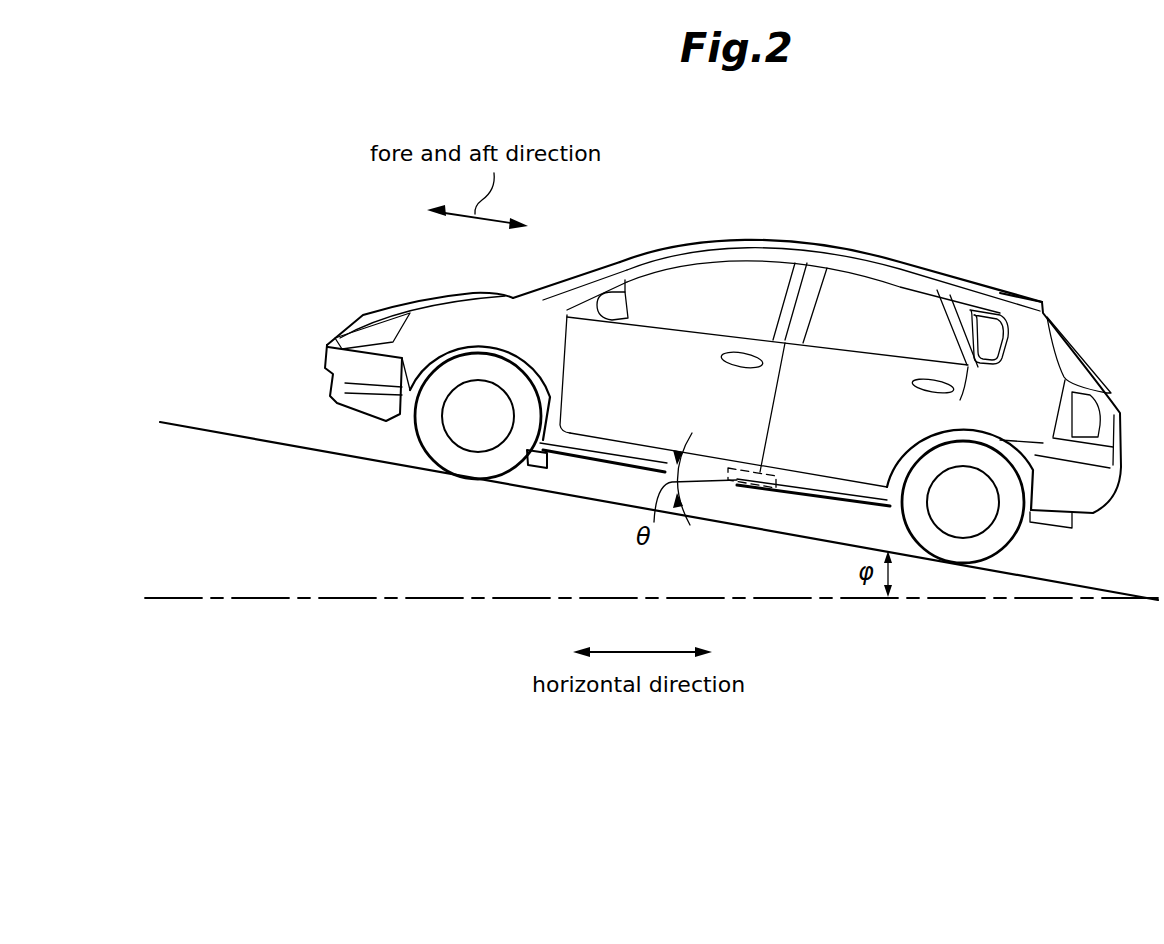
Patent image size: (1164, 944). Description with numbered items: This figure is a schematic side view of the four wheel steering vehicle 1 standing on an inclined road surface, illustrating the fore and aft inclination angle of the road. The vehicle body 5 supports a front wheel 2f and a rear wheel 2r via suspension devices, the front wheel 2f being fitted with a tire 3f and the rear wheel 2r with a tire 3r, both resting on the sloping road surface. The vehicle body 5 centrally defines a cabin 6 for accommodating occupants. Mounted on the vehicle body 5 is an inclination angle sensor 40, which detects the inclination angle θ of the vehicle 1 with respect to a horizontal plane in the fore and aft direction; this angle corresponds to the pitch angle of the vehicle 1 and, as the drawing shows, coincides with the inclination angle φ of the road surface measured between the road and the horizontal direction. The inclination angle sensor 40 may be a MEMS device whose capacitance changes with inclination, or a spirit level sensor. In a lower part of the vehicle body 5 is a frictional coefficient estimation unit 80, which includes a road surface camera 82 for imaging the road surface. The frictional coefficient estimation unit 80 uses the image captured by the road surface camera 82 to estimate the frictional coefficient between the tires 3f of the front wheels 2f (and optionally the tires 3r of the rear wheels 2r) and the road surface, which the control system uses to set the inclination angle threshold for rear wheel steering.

The four wheel steering vehicle 1 is at (866, 232).
The vehicle body 5 is at (1031, 296).
The cabin 6 is at (732, 314).
The front wheel 2f is at (470, 468).
The tire of the front wheel 3f is at (415, 440).
The rear wheel 2r is at (963, 556).
The tire of the rear wheel 3r is at (1000, 540).
The inclination angle sensor 40 is at (765, 490).
The road surface camera 82 is at (537, 462).
The frictional coefficient estimation unit 80 is at (543, 507).